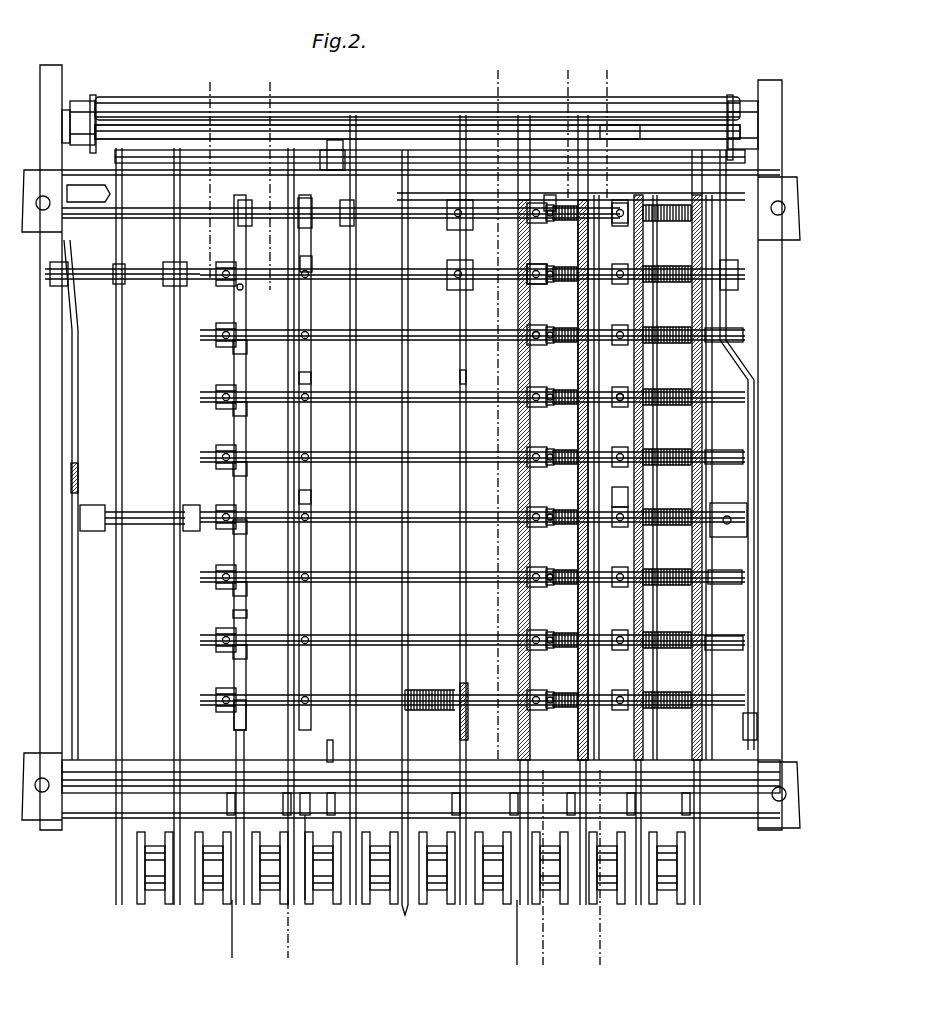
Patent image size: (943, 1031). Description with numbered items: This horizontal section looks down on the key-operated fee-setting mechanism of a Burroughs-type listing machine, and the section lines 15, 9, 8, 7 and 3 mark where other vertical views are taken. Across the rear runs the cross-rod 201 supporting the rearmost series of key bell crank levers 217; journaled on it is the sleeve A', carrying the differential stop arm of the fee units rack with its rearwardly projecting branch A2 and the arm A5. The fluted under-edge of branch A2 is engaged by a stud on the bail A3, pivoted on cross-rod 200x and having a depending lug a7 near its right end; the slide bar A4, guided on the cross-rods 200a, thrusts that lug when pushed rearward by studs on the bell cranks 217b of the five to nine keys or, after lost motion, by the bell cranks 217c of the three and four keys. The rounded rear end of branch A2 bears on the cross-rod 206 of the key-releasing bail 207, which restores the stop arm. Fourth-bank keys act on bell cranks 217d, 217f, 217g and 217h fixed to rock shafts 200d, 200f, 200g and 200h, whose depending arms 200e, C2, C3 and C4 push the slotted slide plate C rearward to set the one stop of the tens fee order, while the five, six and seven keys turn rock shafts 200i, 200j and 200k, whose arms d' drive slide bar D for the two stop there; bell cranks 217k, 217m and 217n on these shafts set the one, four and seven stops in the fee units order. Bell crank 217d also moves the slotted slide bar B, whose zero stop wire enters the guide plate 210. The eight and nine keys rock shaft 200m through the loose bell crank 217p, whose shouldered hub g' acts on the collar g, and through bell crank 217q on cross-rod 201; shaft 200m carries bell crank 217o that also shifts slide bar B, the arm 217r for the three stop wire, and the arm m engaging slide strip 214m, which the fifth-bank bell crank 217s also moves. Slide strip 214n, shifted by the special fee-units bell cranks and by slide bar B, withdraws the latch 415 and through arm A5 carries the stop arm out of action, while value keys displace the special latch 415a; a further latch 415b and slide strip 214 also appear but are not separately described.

The cross-rod 206 is at (675, 113).
The key-releasing bail 207 is at (94, 100).
The rearwardly-projecting branch A2 is at (358, 128).
The bail A3 is at (440, 148).
The cross-rod 201 is at (430, 201).
The depending lug a7 is at (618, 110).
The cross-rod 200x is at (328, 150).
The arm A5 is at (302, 195).
The bell crank lever 217q is at (548, 195).
The section line 15— 15 is at (218, 82).
The section line 9— 9 is at (276, 82).
The section line 8— 8 is at (501, 68).
The section line 7— 7 is at (552, 65).
The section line 3— 3 is at (616, 68).
The sleeve A' is at (322, 254).
The bell crank 217p is at (470, 230).
The bell crank lever 217o is at (616, 228).
The rock shaft 200m is at (200, 282).
The arm 217r is at (238, 290).
The rock shaft 200k is at (200, 336).
The rock shaft 200j is at (200, 396).
The rock shaft 200i is at (200, 458).
The rock shaft 200h is at (200, 528).
The rock shaft 200g is at (200, 580).
The rock shaft 200f is at (200, 640).
The rock shaft 200d is at (200, 700).
The arm 200e is at (235, 725).
The depending arm d' is at (215, 417).
The slotted slide bar D is at (234, 370).
The depending arm C4 is at (233, 530).
The depending arm C3 is at (233, 590).
The depending arm C2 is at (233, 652).
The slide plate C is at (233, 612).
The bell crank lever 217c is at (308, 285).
The bell crank lever 217n is at (306, 345).
The bell crank lever 217m is at (306, 407).
The bell crank 217k is at (306, 466).
The bell crank 217h is at (307, 527).
The bell crank 217g is at (306, 586).
The bell crank 217f is at (306, 648).
The bell crank lever 217d is at (306, 708).
The arm m is at (458, 292).
The shouldered hub g' is at (518, 295).
The shouldered collar g is at (515, 355).
The slide strip 214n is at (311, 378).
The slide strip 214m is at (460, 375).
The slotted slide bar B is at (311, 497).
The bell crank 217b is at (620, 352).
The key bell crank lever 217 is at (530, 490).
The slide bar A4 is at (628, 497).
The cross-rod 200a is at (702, 507).
The bell crank lever 217s is at (465, 690).
The post 415b is at (333, 748).
The latch 415 is at (445, 790).
The special latch 415a is at (308, 905).
The guide plate 210 is at (406, 915).
The bar 214 is at (645, 735).